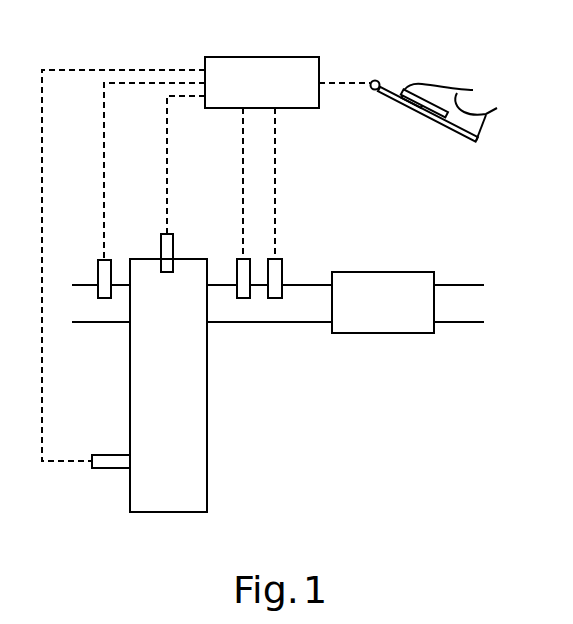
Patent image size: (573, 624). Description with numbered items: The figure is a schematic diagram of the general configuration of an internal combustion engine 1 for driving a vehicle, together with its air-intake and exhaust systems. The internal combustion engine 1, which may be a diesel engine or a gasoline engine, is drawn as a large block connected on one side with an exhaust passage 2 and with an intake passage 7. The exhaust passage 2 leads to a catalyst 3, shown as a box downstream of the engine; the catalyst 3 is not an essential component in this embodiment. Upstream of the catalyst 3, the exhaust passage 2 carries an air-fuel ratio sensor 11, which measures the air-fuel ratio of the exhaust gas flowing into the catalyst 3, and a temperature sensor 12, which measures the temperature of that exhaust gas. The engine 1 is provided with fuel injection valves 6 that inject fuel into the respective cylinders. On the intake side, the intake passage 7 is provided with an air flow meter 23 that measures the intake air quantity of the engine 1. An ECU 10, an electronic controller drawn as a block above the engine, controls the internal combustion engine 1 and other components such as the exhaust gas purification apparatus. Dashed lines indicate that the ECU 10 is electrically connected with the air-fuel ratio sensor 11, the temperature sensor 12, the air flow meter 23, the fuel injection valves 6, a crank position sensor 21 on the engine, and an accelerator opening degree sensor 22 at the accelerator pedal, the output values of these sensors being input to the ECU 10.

The internal combustion engine 1 is at (207, 478).
The exhaust passage 2 is at (303, 323).
The catalyst 3 is at (381, 334).
The fuel injection valve 6 is at (161, 250).
The intake passage 7 is at (104, 324).
The ECU 10 is at (320, 68).
The air-fuel ratio sensor 11 is at (237, 265).
The temperature sensor 12 is at (269, 298).
The crank position sensor 21 is at (110, 455).
The accelerator opening degree sensor 22 is at (370, 93).
The air flow meter 23 is at (98, 270).